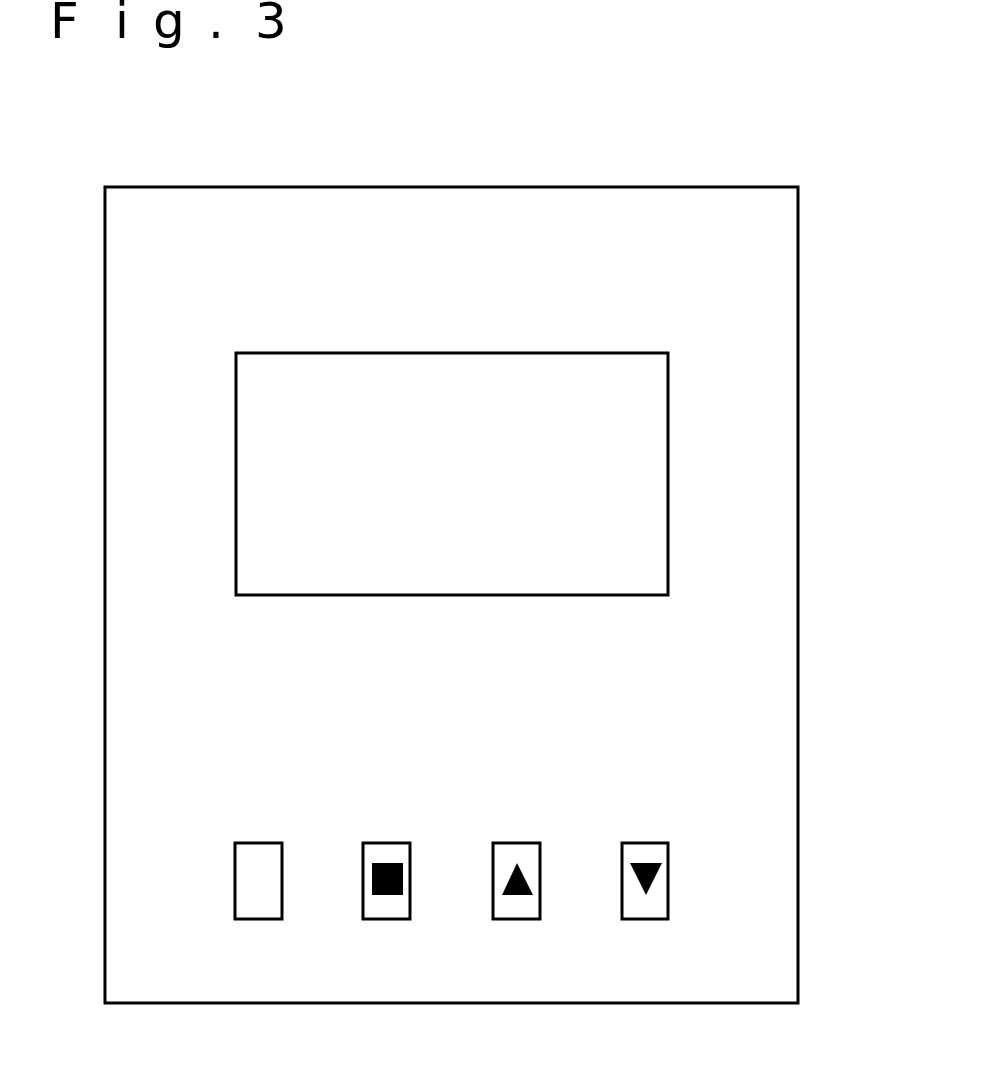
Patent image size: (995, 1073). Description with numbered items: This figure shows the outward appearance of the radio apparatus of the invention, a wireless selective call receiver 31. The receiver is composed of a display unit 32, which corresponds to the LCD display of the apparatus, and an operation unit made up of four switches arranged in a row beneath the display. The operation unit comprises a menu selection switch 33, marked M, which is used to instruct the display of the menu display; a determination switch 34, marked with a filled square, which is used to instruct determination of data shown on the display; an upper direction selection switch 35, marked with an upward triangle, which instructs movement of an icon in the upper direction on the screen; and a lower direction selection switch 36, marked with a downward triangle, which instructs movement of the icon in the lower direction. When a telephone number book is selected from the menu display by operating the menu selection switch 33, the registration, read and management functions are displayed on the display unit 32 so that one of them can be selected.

The wireless selective call receiver 31 is at (798, 333).
The display unit 32 is at (458, 368).
The menu selection switch 33 is at (257, 920).
The determination switch 34 is at (387, 920).
The upper direction selection switch 35 is at (517, 920).
The lower direction selection switch 36 is at (643, 920).